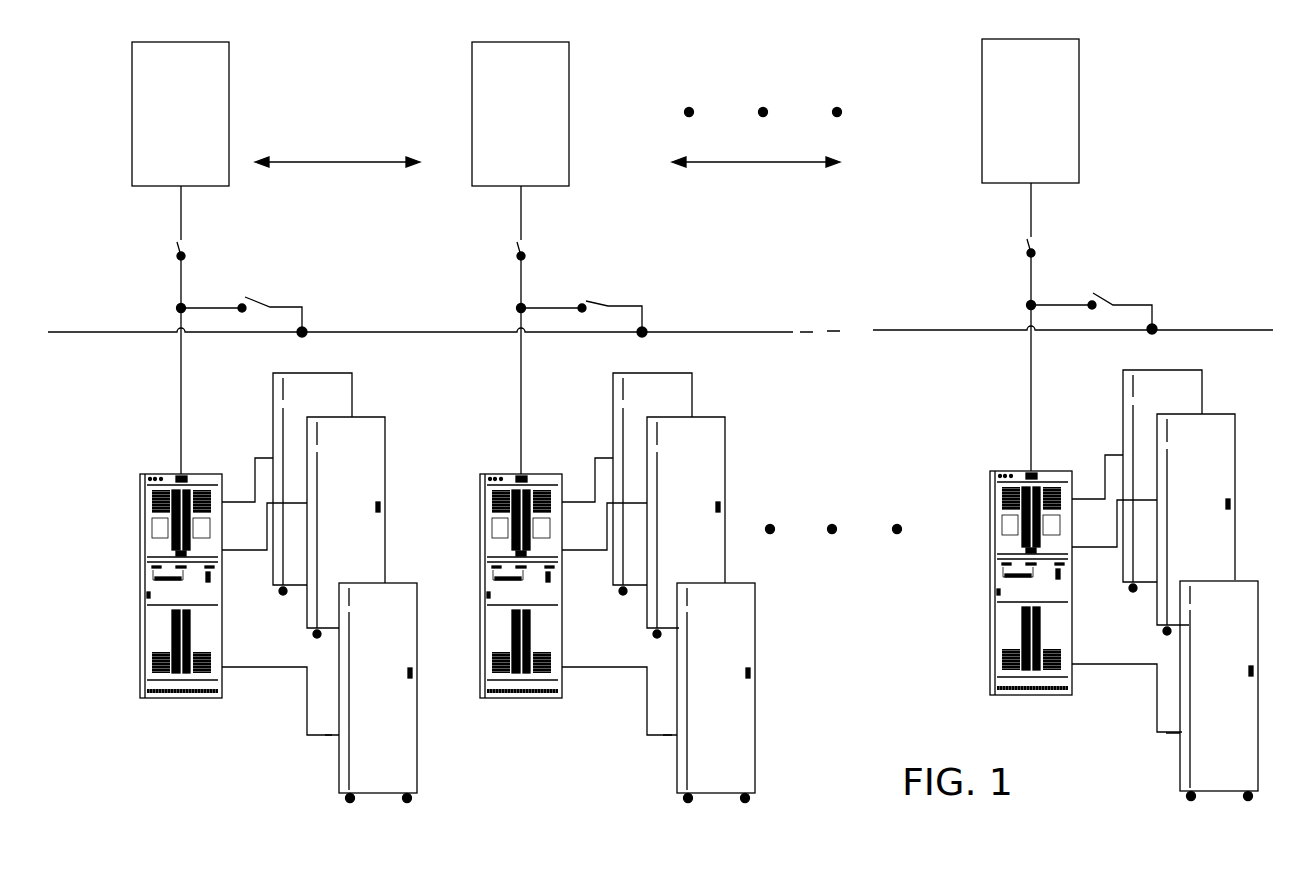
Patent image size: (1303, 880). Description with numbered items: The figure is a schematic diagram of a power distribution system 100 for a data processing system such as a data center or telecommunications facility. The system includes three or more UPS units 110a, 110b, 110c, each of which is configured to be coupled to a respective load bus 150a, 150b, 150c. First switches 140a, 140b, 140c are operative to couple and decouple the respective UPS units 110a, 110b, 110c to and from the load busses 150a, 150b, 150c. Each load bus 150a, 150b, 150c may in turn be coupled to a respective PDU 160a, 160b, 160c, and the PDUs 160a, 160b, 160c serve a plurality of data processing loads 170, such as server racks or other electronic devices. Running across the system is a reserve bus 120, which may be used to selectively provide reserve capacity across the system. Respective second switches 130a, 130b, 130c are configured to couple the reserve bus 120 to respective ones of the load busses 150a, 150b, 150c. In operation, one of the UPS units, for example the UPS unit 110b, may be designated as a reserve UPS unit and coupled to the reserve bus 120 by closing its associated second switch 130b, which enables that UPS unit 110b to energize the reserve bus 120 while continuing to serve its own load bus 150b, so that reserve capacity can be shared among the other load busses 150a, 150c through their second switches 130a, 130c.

The power distribution system 100 is at (1158, 25).
The UPS unit 110a is at (132, 113).
The UPS unit 110b is at (486, 114).
The UPS unit 110c is at (996, 111).
The reserve bus 120 is at (437, 332).
The second switch 130a is at (277, 280).
The second switch 130b is at (613, 297).
The second switch 130c is at (1122, 294).
The first switch 140a is at (162, 229).
The first switch 140b is at (467, 247).
The first switch 140c is at (977, 244).
The load bus 150a is at (180, 405).
The load bus 150b is at (485, 391).
The load bus 150c is at (995, 388).
The PDU 160a is at (140, 577).
The PDU 160b is at (486, 586).
The PDU 160c is at (996, 583).
The data processing loads 170 is at (386, 500).